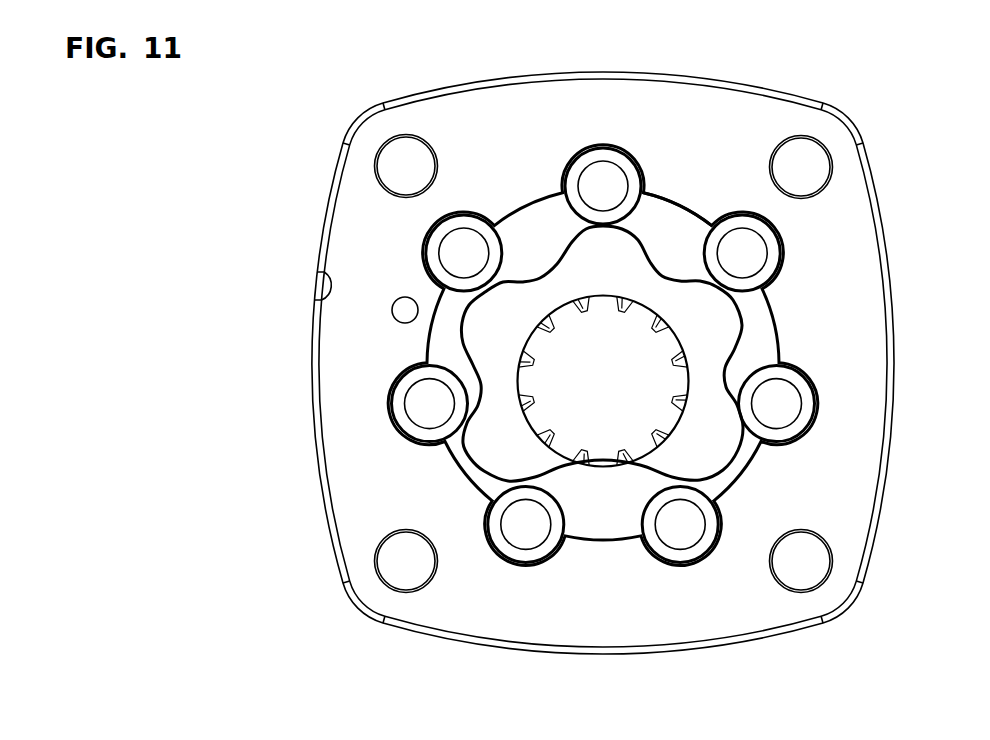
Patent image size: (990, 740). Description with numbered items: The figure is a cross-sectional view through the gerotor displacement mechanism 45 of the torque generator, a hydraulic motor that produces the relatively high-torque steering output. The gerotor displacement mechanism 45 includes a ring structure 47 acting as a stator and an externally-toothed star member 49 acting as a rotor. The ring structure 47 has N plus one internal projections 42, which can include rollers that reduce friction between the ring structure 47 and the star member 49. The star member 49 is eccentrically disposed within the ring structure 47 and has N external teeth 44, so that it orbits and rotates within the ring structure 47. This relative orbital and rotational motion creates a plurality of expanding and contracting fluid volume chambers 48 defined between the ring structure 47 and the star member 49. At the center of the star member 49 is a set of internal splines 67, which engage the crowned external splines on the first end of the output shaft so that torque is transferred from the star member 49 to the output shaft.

The internal projections 42 is at (505, 271).
The external teeth 44 is at (462, 318).
The gerotor displacement mechanism 45 is at (787, 324).
The ring structure 47 is at (652, 190).
The fluid volume chambers 48 is at (672, 255).
The star member 49 is at (567, 537).
The internal splines 67 is at (565, 447).